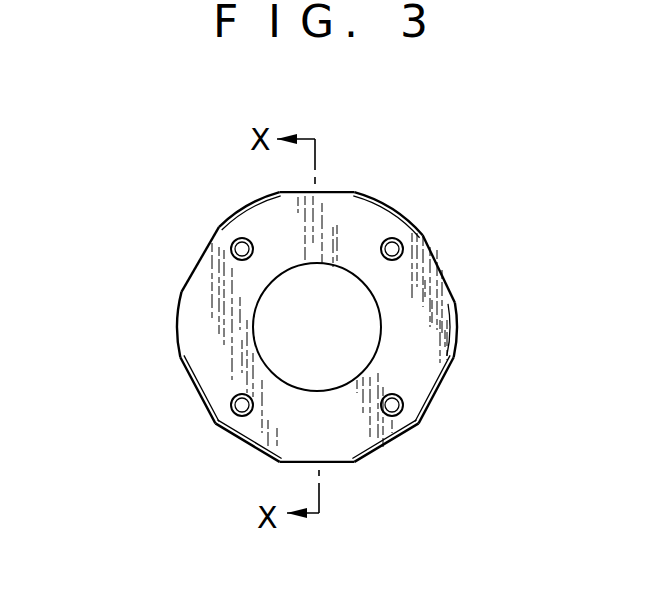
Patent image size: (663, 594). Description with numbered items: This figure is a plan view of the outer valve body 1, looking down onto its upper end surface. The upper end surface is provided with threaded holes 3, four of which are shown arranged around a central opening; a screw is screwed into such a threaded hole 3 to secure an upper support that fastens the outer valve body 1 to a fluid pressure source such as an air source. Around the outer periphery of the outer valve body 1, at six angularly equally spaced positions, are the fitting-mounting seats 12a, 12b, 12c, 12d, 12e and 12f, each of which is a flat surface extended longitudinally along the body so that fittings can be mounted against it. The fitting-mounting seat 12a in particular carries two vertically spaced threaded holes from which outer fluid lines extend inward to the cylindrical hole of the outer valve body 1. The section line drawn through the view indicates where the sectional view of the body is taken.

The outer valve body 1 is at (405, 214).
The threaded hole 3 is at (232, 242).
The fitting-mounting seat 12a is at (338, 462).
The fitting-mounting seat 12b is at (433, 392).
The fitting-mounting seat 12c is at (433, 259).
The fitting-mounting seat 12d is at (334, 190).
The fitting-mounting seat 12e is at (214, 232).
The fitting-mounting seat 12f is at (203, 398).